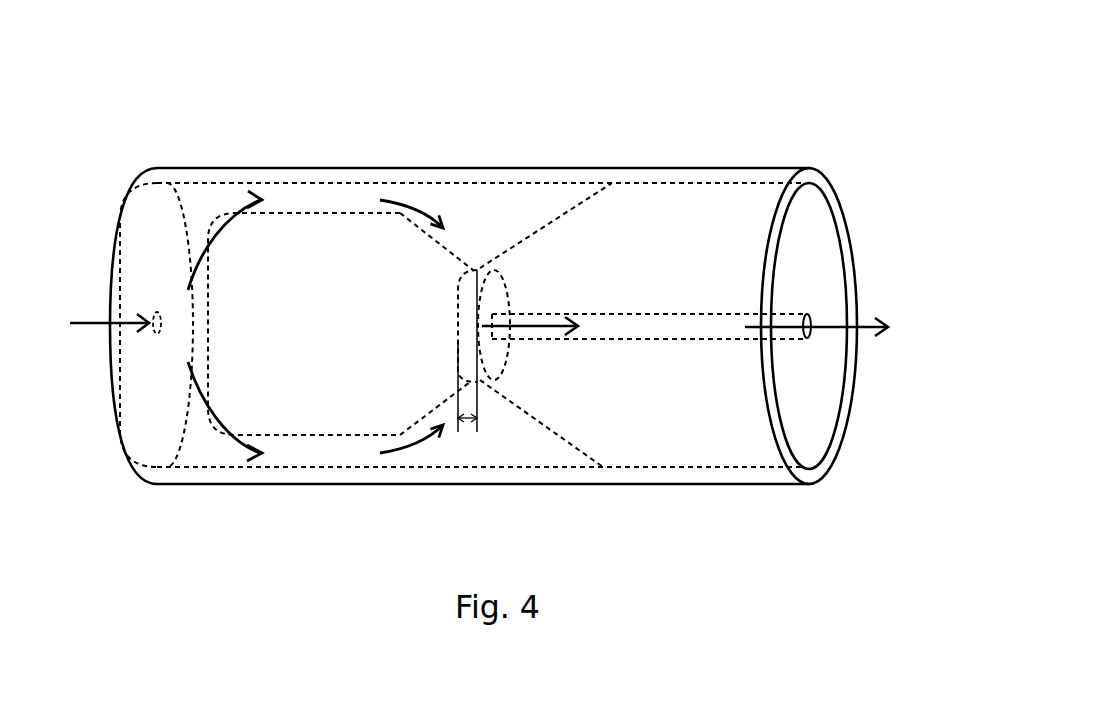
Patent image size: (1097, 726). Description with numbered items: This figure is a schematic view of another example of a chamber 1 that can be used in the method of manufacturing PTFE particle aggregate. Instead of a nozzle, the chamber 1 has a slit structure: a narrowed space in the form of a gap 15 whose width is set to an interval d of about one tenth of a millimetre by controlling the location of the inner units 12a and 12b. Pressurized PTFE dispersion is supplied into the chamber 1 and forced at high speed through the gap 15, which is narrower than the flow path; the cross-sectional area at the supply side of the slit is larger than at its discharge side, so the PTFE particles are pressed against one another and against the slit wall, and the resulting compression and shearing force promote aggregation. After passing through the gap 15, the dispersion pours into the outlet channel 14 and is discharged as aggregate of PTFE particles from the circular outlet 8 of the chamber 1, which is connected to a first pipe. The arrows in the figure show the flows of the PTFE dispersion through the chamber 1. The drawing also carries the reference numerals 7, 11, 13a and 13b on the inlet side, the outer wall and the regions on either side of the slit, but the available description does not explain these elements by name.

The chamber 1 is at (787, 102).
The inlet opening 7 is at (150, 340).
The outlet 8 is at (816, 334).
The housing 11 is at (389, 168).
The inner unit 12a is at (308, 232).
The inner unit 12b is at (700, 200).
The upstream cone 13a is at (457, 305).
The downstream opening 13b is at (507, 300).
The outlet channel 14 is at (647, 330).
The gap 15 is at (481, 266).